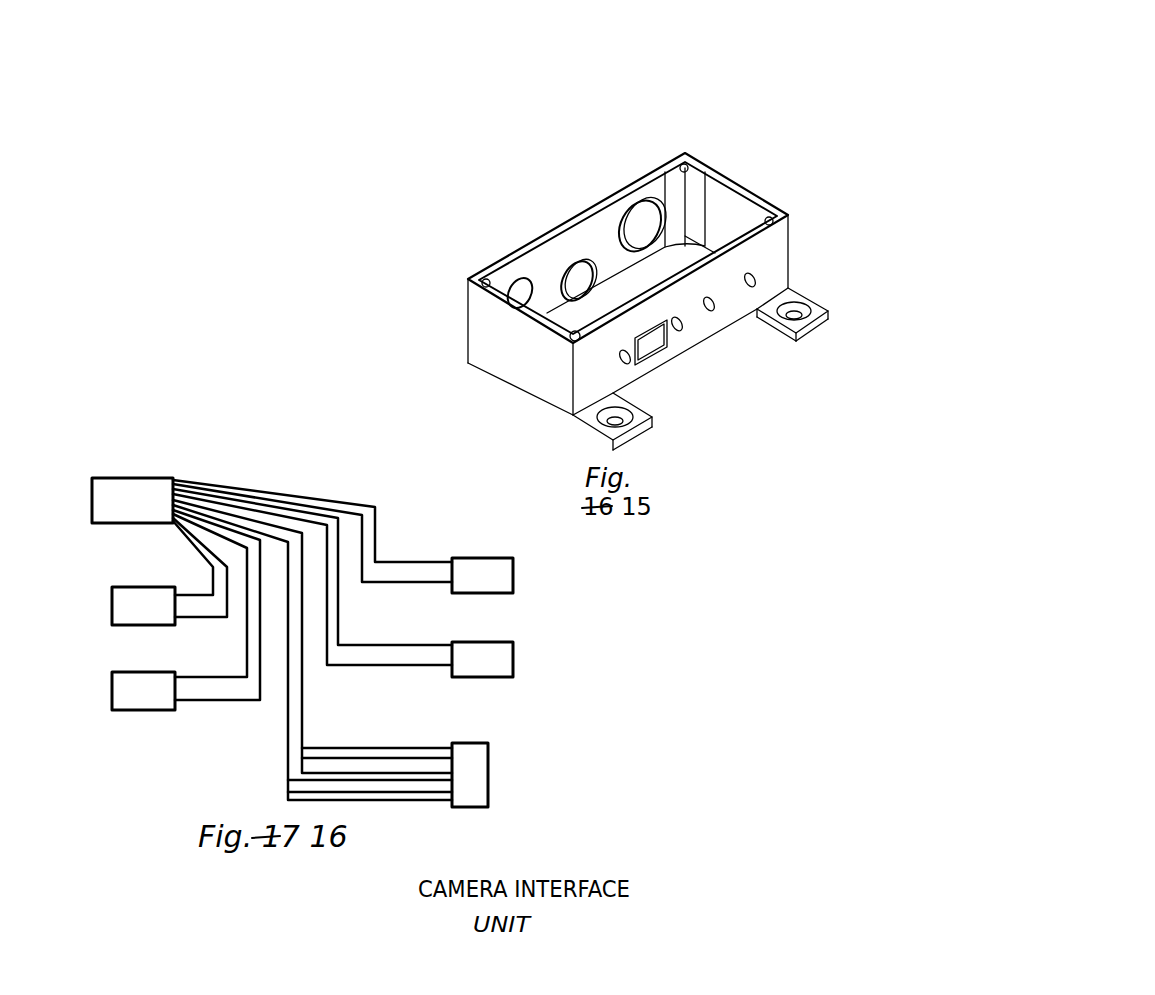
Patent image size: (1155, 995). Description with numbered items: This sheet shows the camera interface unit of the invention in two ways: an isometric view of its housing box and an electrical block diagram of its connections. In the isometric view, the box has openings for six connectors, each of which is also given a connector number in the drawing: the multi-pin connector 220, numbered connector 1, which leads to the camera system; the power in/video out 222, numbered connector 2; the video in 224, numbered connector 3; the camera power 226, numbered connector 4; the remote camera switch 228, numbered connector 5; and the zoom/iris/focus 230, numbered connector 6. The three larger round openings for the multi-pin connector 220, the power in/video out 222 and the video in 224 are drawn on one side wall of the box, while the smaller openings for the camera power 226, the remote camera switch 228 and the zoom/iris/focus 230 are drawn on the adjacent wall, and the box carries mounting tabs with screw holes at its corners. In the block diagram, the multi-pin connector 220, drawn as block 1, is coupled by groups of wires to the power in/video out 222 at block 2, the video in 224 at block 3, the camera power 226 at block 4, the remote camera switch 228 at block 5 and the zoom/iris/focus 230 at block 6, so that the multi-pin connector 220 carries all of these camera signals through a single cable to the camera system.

In FIG. 15, the multi-pin connector 220 is at (663, 338).
In FIG. 16, the multi-pin connector 220 is at (243, 639).
In FIG. 15, the power in/video out 222 is at (444, 246).
In FIG. 16, the power in/video out 222 is at (107, 606).
In FIG. 15, the video in 224 is at (390, 318).
In FIG. 16, the video in 224 is at (119, 691).
In FIG. 15, the camera power 226 is at (916, 235).
In FIG. 16, the camera power 226 is at (510, 575).
In FIG. 15, the remote camera switch 228 is at (922, 358).
In FIG. 16, the remote camera switch 228 is at (510, 659).
In FIG. 15, the zoom/iris/focus 230 is at (767, 453).
In FIG. 16, the zoom/iris/focus 230 is at (505, 775).
In FIG. 15, the multi pin connector to camera system 1 is at (444, 183).
In FIG. 16, the multi pin connector to camera system 1 is at (132, 500).
In FIG. 15, the power in / video out connector 2 is at (455, 247).
In FIG. 16, the power in / video out connector 2 is at (143, 606).
In FIG. 15, the video in connector 3 is at (400, 318).
In FIG. 16, the video in connector 3 is at (143, 691).
In FIG. 15, the camera power connector 4 is at (903, 245).
In FIG. 16, the camera power connector 4 is at (482, 575).
In FIG. 15, the remote camera switch connector 5 is at (913, 358).
In FIG. 16, the remote camera switch connector 5 is at (482, 659).
In FIG. 15, the zoom iris focus connector 6 is at (752, 453).
In FIG. 16, the zoom iris focus connector 6 is at (470, 775).